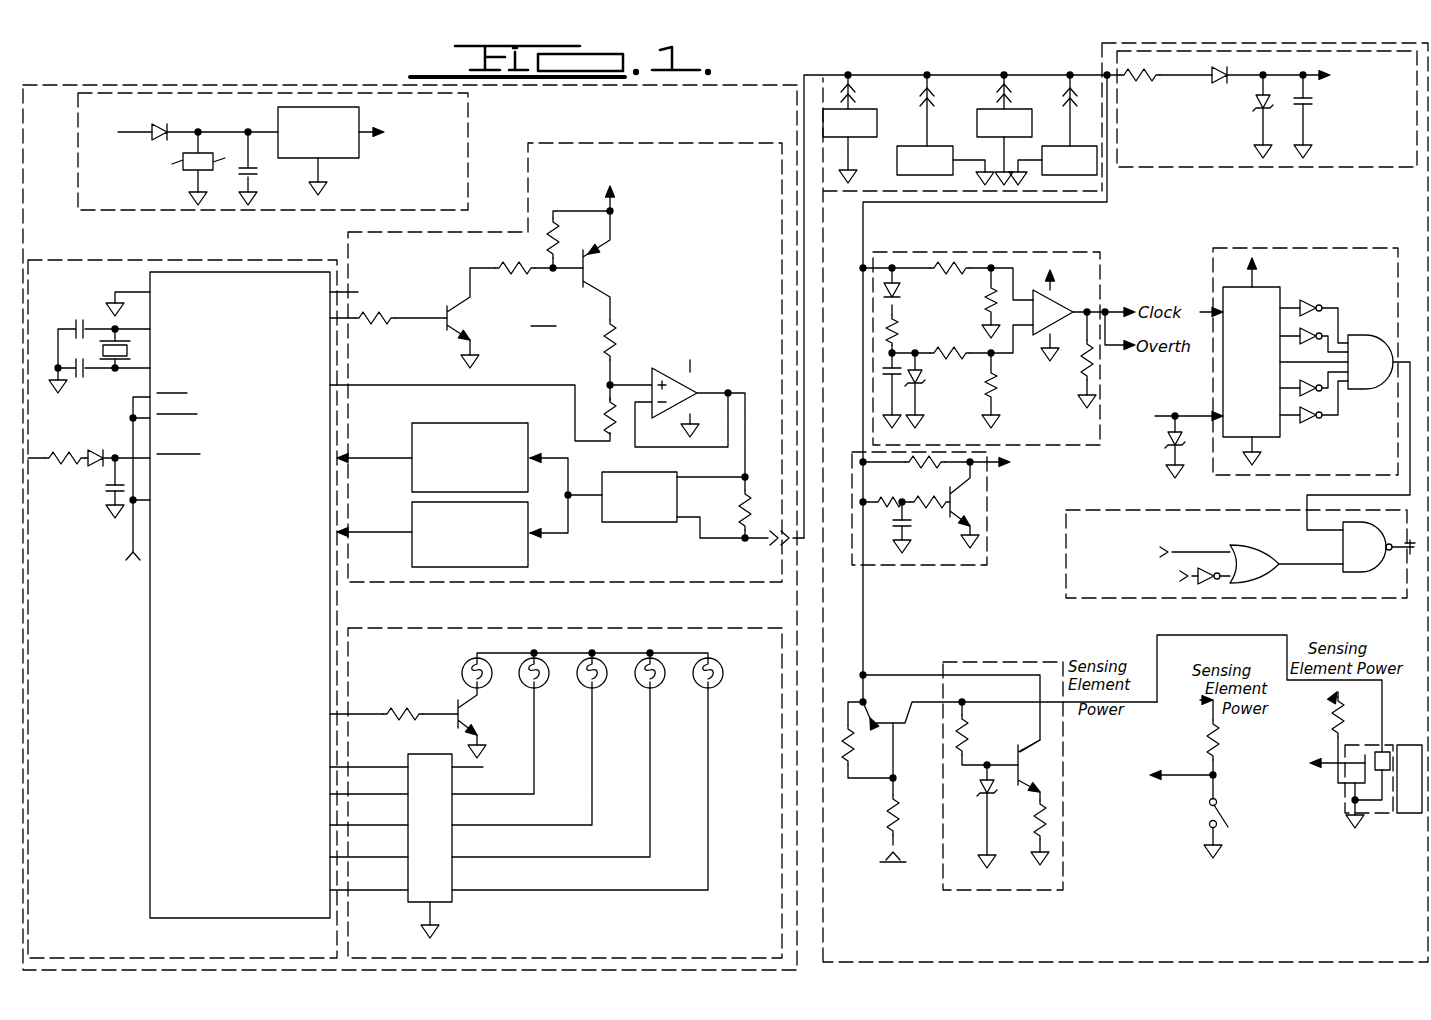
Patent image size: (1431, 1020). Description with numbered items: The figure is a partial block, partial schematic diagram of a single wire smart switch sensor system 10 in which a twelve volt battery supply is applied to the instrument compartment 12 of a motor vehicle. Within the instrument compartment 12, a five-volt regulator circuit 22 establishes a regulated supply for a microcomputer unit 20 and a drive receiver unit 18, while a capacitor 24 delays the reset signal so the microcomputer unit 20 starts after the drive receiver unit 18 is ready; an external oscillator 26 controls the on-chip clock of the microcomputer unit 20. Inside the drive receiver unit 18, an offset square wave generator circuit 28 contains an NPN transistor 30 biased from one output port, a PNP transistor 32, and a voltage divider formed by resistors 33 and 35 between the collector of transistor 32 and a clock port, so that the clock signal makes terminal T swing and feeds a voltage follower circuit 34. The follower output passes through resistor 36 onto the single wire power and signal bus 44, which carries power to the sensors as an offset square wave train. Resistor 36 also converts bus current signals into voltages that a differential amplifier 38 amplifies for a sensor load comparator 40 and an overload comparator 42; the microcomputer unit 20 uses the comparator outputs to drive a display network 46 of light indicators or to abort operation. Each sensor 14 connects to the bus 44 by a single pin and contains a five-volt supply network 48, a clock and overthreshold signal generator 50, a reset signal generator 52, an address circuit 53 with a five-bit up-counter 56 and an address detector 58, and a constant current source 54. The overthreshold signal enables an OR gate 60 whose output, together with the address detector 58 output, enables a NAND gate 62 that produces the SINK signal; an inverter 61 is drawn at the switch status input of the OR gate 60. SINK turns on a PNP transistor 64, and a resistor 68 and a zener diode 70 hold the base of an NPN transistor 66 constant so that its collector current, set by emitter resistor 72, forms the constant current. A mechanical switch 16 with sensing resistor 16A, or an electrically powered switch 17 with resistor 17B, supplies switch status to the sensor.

The single wire smart switch sensor system 10 is at (773, 128).
The instrument compartment 12 is at (213, 85).
The sensor 14 is at (876, 112).
The switch 16 is at (848, 148).
The resistor 16A is at (1205, 728).
The switch 17 is at (1328, 816).
The resistor 17B is at (1330, 727).
The drive receiver unit 18 is at (579, 144).
The microcomputer unit 20 is at (140, 682).
The 5-volt regulator circuit 22 is at (468, 118).
The capacitor 24 is at (108, 473).
The external oscillator 26 is at (95, 368).
The offset square wave generator circuit 28 is at (608, 364).
The NPN transistor 30 is at (470, 323).
The PNP transistor 32 is at (597, 282).
The resistor 33 is at (620, 330).
The voltage follower circuit 34 is at (697, 381).
The resistor 35 is at (598, 374).
The resistor 36 is at (744, 510).
The differential amplifier 38 is at (636, 522).
The sensor load comparator 40 is at (505, 412).
The overload comparator 42 is at (528, 555).
The single wire power and signal bus 44 is at (804, 75).
The display network 46 is at (662, 620).
The 5 VDC supply network 48 is at (1318, 175).
The clock and overthreshold signal generator 50 is at (1103, 279).
The reset signal generator 52 is at (987, 495).
The address circuit 53 is at (1271, 368).
The constant current source 54 is at (1009, 778).
The 5-bit up-counter 56 is at (1280, 288).
The address detector 58 is at (1364, 336).
The OR gate 60 is at (1236, 568).
The inverter 61 is at (1211, 582).
The NAND gate 62 is at (1346, 568).
The PNP transistor 64 is at (904, 732).
The NPN transistor 66 is at (1008, 766).
The resistor 68 is at (966, 734).
The zener diode 70 is at (978, 810).
The emitter resistor 72 is at (1052, 824).